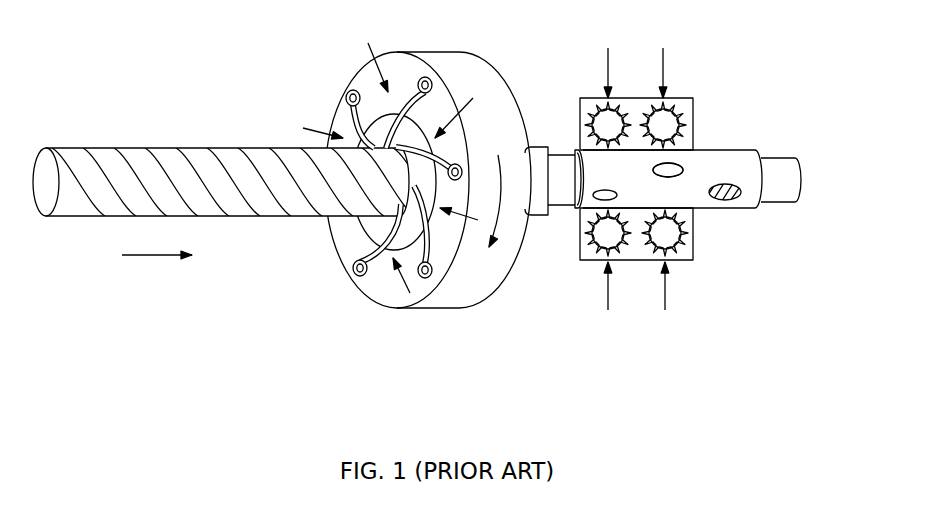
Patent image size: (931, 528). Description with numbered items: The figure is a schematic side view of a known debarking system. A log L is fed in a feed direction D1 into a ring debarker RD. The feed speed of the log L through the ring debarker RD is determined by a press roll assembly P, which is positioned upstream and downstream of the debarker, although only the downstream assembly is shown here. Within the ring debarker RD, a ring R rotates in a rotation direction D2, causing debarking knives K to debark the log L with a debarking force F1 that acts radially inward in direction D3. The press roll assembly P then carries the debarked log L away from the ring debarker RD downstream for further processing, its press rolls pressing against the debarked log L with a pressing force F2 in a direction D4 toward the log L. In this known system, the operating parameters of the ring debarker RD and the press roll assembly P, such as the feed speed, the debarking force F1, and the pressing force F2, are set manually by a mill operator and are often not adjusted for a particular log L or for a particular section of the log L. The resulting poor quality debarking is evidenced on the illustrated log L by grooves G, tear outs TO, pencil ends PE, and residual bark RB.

The log L is at (192, 148).
The feed direction D1 is at (155, 262).
The debarking force F1 is at (368, 52).
The radially inward direction D3 is at (378, 67).
The debarking knives K is at (370, 270).
The ring R is at (473, 308).
The ring debarker RD is at (410, 336).
The rotation direction D2 is at (522, 245).
The grooves G is at (558, 150).
The press roll assembly P is at (704, 274).
The pressing force F2 is at (629, 59).
The pressing direction D4 is at (606, 70).
The tear outs TO is at (684, 168).
The residual bark RB is at (733, 184).
The pencil ends PE is at (780, 158).